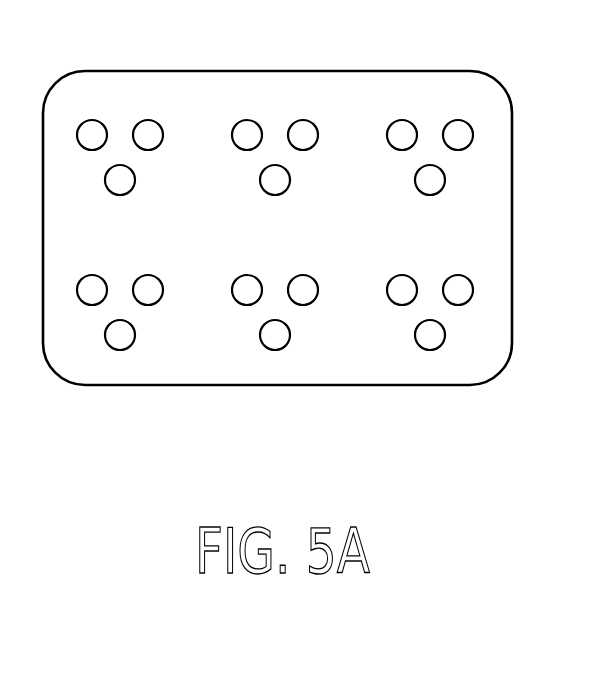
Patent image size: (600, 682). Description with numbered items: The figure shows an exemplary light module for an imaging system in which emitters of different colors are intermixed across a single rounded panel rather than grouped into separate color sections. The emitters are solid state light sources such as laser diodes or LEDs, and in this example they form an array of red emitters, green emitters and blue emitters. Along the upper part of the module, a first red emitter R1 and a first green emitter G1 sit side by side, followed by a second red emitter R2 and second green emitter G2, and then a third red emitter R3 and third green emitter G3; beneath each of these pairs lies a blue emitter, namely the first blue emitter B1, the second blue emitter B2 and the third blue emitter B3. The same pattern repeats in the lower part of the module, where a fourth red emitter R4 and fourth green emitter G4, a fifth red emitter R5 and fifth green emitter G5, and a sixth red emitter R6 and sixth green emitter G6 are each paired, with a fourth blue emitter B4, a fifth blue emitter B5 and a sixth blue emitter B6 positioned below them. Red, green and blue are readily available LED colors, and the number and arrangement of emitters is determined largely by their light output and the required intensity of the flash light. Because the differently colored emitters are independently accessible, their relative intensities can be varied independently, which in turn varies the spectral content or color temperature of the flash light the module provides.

The red emitter R1 is at (92, 120).
The green emitter G1 is at (148, 120).
The blue emitter B1 is at (135, 180).
The red emitter R2 is at (247, 120).
The green emitter G2 is at (303, 120).
The blue emitter B2 is at (290, 180).
The red emitter R3 is at (402, 120).
The green emitter G3 is at (458, 120).
The blue emitter B3 is at (445, 180).
The red emitter R4 is at (86, 276).
The green emitter G4 is at (142, 276).
The blue emitter B4 is at (120, 350).
The red emitter R5 is at (241, 276).
The green emitter G5 is at (297, 276).
The blue emitter B5 is at (275, 350).
The red emitter R6 is at (396, 276).
The green emitter G6 is at (452, 276).
The blue emitter B6 is at (430, 350).